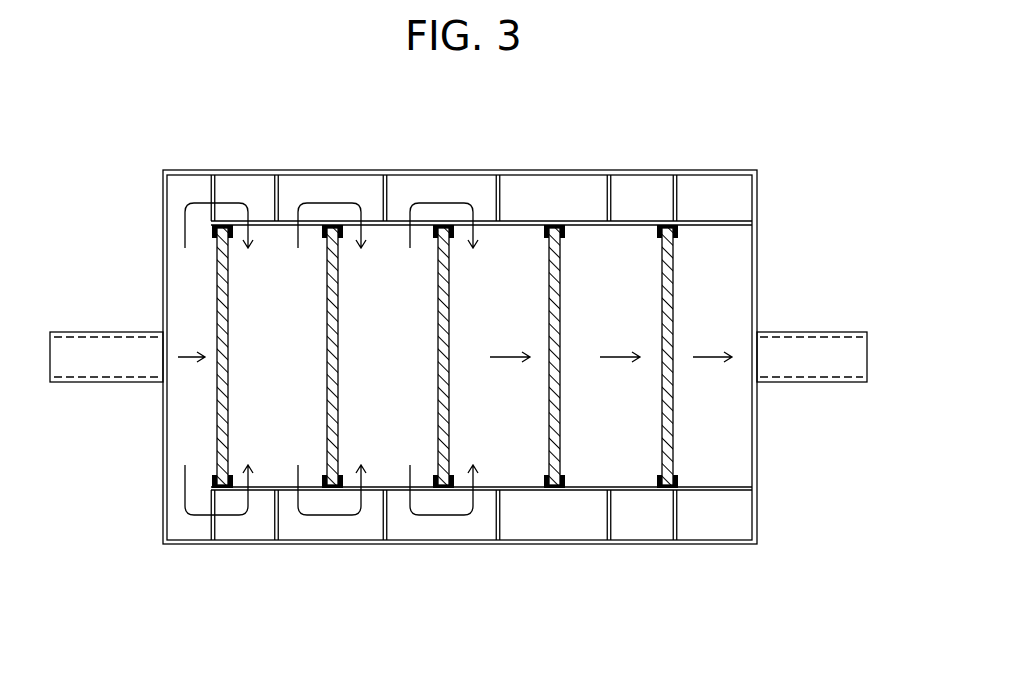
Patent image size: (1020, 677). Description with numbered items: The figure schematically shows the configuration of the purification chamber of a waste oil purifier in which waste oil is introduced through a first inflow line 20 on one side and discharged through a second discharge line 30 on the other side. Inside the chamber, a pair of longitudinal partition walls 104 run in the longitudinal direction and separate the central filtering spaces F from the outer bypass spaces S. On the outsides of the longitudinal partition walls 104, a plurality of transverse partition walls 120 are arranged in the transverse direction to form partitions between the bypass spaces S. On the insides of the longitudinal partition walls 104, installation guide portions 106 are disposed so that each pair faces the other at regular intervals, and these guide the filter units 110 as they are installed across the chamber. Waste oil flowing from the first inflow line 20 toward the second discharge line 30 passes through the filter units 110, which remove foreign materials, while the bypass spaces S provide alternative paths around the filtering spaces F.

The longitudinal partition wall 104 is at (732, 487).
The transverse partition wall 120 is at (507, 173).
The filter unit 110 is at (672, 257).
The installation guide portion 106 is at (677, 478).
The first inflow line 20 is at (108, 345).
The second discharge line 30 is at (833, 342).
The bypass space S is at (446, 182).
The filtering space F is at (416, 413).